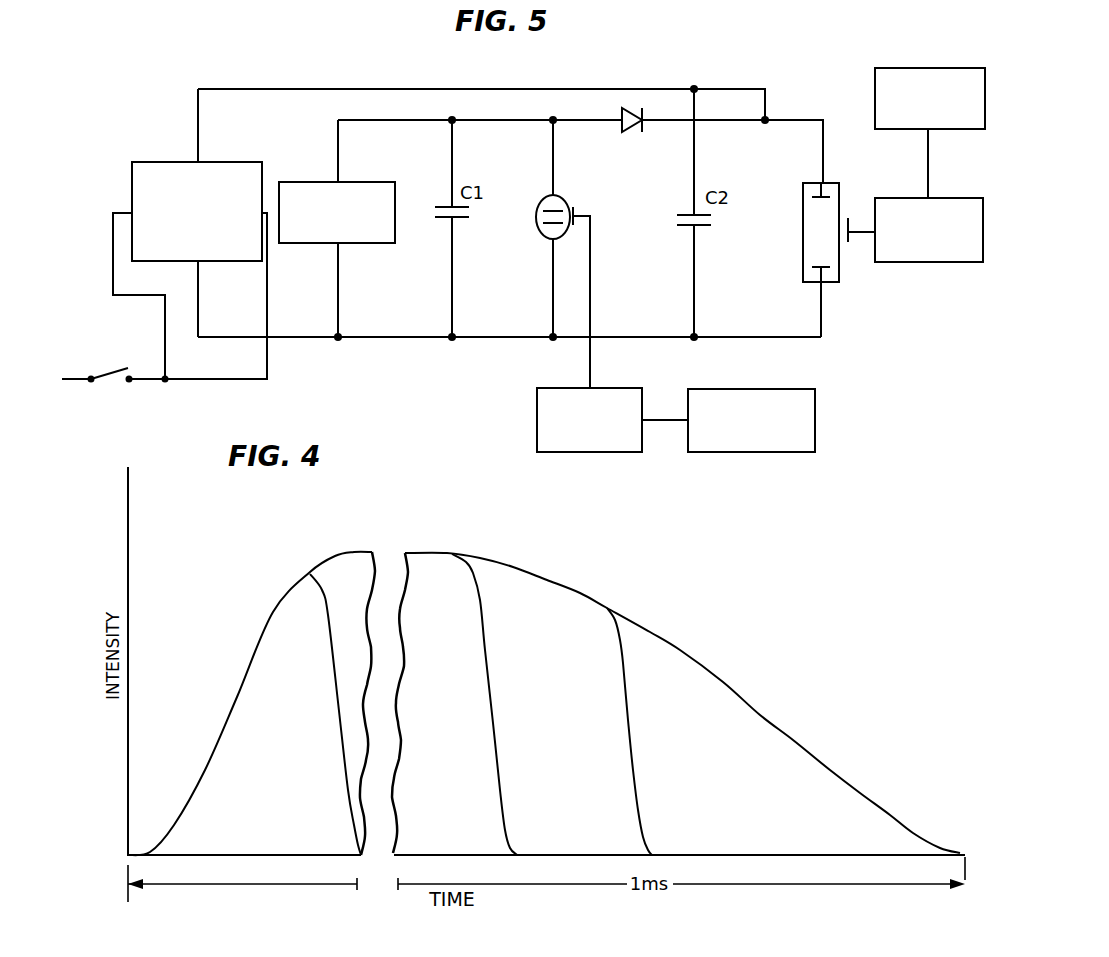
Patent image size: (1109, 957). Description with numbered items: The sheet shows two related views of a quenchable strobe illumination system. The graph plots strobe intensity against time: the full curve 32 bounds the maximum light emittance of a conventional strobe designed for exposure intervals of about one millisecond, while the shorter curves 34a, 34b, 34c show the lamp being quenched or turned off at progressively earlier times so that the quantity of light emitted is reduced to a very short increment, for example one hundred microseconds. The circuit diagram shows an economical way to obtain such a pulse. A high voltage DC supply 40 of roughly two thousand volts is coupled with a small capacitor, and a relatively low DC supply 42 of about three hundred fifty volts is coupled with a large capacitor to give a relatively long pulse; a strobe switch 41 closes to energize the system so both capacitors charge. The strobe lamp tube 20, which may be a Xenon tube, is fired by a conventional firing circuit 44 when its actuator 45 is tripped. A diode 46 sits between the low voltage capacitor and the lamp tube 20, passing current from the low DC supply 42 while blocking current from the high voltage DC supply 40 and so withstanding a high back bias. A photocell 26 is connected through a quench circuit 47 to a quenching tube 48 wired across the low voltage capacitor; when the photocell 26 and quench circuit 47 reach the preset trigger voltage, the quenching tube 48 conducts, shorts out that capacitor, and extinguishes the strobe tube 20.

In FIG. 5, the high voltage DC supply 40 is at (245, 162).
In FIG. 5, the strobe switch 41 is at (115, 382).
In FIG. 5, the low DC supply 42 is at (382, 182).
In FIG. 5, the diode 46 is at (630, 110).
In FIG. 5, the quenching tube 48 is at (561, 199).
In FIG. 5, the strobe lamp tube 20 is at (840, 196).
In FIG. 5, the firing circuit 44 is at (925, 262).
In FIG. 5, the actuator 45 is at (922, 68).
In FIG. 5, the quench circuit 47 is at (590, 452).
In FIG. 5, the photocell 26 is at (722, 452).
In FIG. 4, the curve 32 is at (722, 682).
In FIG. 4, the curve 34a is at (630, 720).
In FIG. 4, the curve 34b is at (493, 722).
In FIG. 4, the curve 34c is at (337, 711).